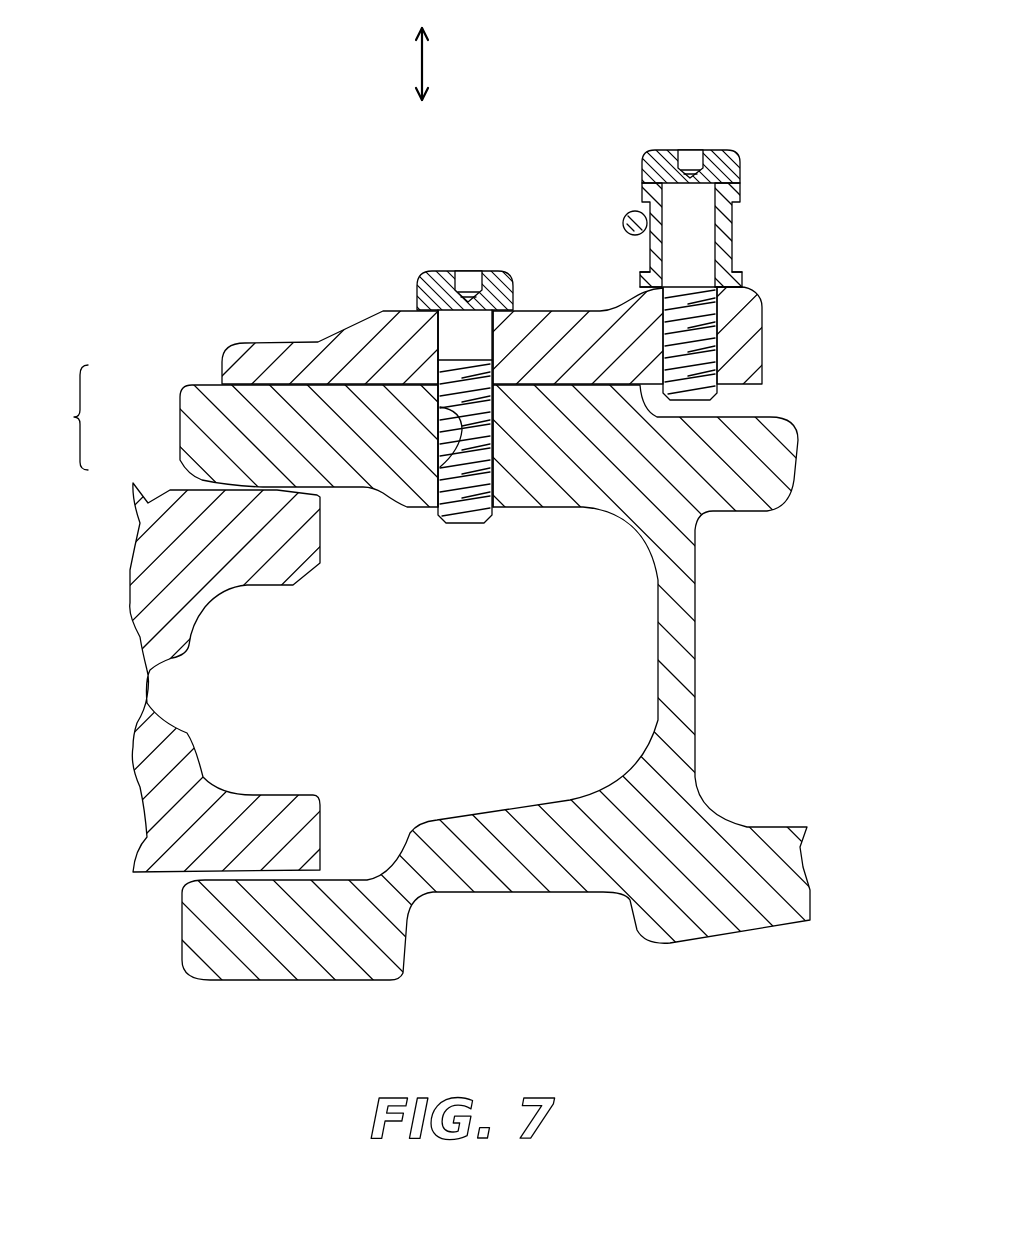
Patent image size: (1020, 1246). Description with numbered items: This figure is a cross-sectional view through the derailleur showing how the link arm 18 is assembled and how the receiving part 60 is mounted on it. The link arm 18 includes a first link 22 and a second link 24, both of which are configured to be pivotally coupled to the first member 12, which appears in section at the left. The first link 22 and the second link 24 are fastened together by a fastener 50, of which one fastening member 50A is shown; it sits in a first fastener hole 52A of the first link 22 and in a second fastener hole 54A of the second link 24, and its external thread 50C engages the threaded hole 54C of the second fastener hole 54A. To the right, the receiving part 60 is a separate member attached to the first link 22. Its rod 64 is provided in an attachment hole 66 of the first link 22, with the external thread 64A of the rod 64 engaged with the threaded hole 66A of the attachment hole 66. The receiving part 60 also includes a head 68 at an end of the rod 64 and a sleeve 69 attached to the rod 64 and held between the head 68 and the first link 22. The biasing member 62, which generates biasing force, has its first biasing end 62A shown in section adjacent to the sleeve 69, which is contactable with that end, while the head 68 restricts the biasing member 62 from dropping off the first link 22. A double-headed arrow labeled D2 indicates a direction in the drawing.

The first member 12 is at (118, 755).
The link arm 18 is at (66, 417).
The first link 22 is at (428, 323).
The second link 24 is at (452, 682).
The fastener 50 is at (504, 335).
The fastening member 50A is at (472, 259).
The external thread 50C is at (480, 425).
The first fastener hole 52A is at (490, 357).
The second fastener hole 54A is at (445, 507).
The threaded hole 54C is at (462, 440).
The receiving part 60 is at (693, 231).
The biasing member 62 is at (600, 173).
The first biasing end 62A is at (633, 210).
The rod 64 is at (735, 239).
The external thread 64A is at (720, 287).
The attachment hole 66 is at (748, 343).
The threaded hole 66A is at (667, 357).
The head 68 is at (720, 167).
The sleeve 69 is at (720, 218).
The direction D2 is at (422, 55).